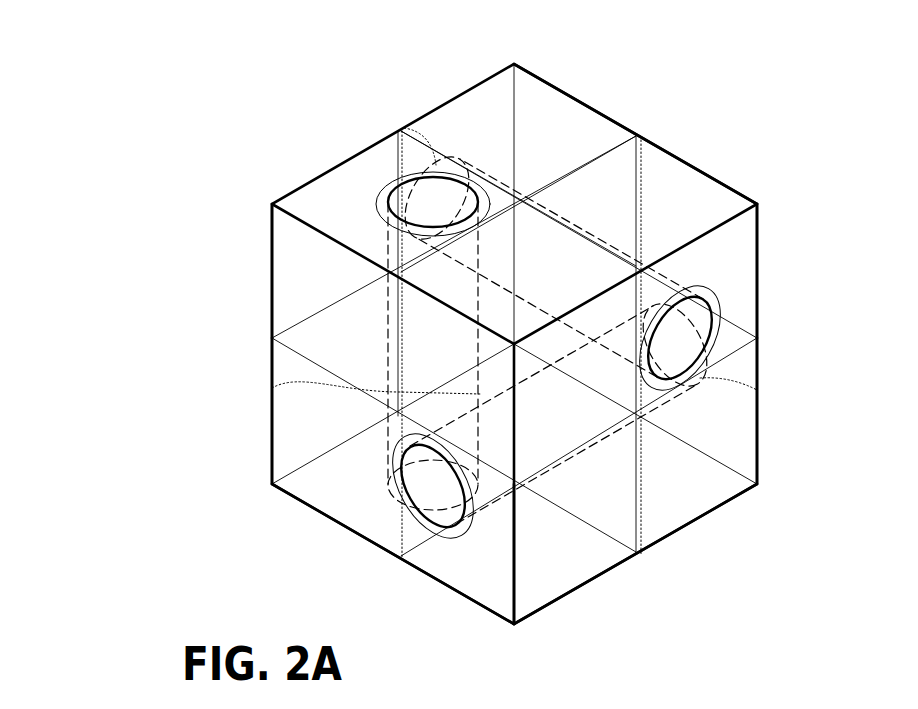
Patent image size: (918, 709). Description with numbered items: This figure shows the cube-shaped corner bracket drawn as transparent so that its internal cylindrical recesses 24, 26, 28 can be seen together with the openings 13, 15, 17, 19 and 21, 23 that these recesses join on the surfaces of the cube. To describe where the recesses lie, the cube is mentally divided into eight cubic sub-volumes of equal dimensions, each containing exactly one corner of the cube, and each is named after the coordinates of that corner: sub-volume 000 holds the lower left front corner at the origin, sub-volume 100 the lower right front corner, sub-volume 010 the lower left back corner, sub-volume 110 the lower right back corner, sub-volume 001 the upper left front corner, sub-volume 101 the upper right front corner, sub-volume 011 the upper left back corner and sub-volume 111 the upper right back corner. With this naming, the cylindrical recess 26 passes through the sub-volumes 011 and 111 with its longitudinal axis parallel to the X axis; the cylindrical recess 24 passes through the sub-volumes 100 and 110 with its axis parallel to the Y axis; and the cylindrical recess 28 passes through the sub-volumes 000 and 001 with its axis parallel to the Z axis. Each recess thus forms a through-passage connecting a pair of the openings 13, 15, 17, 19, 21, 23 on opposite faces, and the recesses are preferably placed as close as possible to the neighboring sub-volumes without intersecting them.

The cubic sub-volume 011 is at (473, 108).
The cubic sub-volume 001 is at (298, 265).
The cubic sub-volume 111 is at (735, 240).
The cubic sub-volume 010 is at (272, 389).
The cubic sub-volume 110 is at (728, 445).
The cubic sub-volume 000 is at (323, 488).
The cubic sub-volume 100 is at (485, 577).
The cubic sub-volume 101 is at (523, 368).
The opening 21 is at (397, 180).
The cylindrical recess 28 is at (420, 183).
The opening 19 is at (436, 170).
The opening 17 is at (712, 320).
The cylindrical recess 26 is at (677, 343).
The opening 15 is at (757, 390).
The opening 23 is at (395, 500).
The cylindrical recess 24 is at (433, 485).
The opening 13 is at (393, 503).